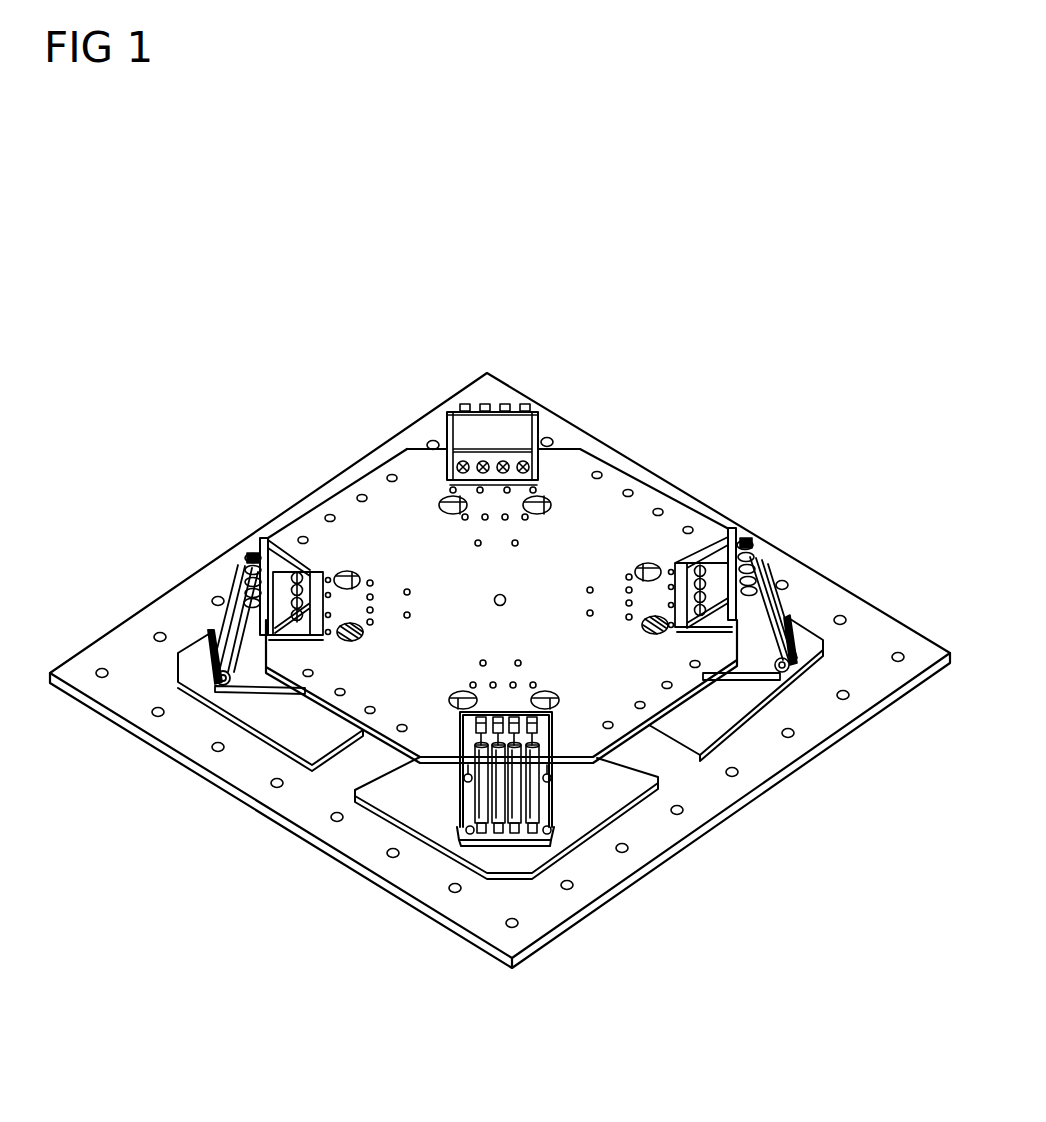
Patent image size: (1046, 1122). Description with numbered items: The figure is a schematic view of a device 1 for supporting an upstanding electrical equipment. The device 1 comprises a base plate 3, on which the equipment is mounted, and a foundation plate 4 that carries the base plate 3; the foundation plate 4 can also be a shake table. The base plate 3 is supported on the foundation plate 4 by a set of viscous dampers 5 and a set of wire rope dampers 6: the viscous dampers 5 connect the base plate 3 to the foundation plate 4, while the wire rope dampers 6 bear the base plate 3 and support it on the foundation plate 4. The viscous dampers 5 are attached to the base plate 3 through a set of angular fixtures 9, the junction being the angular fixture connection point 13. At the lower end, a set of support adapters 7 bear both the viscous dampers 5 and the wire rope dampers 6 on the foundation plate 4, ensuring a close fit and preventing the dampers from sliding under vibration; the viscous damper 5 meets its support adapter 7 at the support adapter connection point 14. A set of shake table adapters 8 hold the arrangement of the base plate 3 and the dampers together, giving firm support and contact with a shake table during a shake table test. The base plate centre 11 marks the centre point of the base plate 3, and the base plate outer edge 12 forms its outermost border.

The device 1 is at (500, 677).
The base plate 3 is at (491, 591).
The foundation plate 4 is at (410, 868).
The viscous dampers 5 is at (451, 679).
The wire rope dampers 6 is at (653, 627).
The support adapters 7 is at (458, 797).
The shake table adapters 8 is at (223, 712).
The angular fixtures 9 is at (262, 552).
The base plate centre 11 is at (497, 600).
The base plate outer edge 12 is at (355, 487).
The angular fixture connection point 13 is at (253, 547).
The support adapter connection point 14 is at (225, 607).